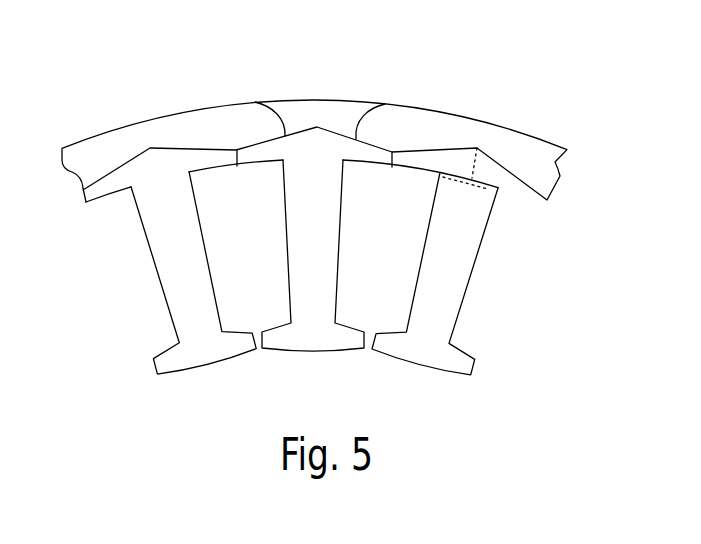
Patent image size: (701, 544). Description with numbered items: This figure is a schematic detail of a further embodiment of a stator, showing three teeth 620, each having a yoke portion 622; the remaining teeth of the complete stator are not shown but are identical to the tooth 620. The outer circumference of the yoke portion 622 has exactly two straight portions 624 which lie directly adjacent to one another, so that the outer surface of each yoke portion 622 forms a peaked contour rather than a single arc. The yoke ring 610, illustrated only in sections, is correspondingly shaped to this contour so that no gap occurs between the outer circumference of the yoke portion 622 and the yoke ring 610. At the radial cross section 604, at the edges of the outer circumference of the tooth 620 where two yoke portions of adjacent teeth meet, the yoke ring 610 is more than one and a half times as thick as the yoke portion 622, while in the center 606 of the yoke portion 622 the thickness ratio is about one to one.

The yoke ring 610 is at (128, 122).
The tooth 620 is at (252, 229).
The yoke portion 622 is at (355, 163).
The straight portions 624 is at (255, 102).
The radial cross section 604 is at (236, 150).
The center 606 is at (474, 147).